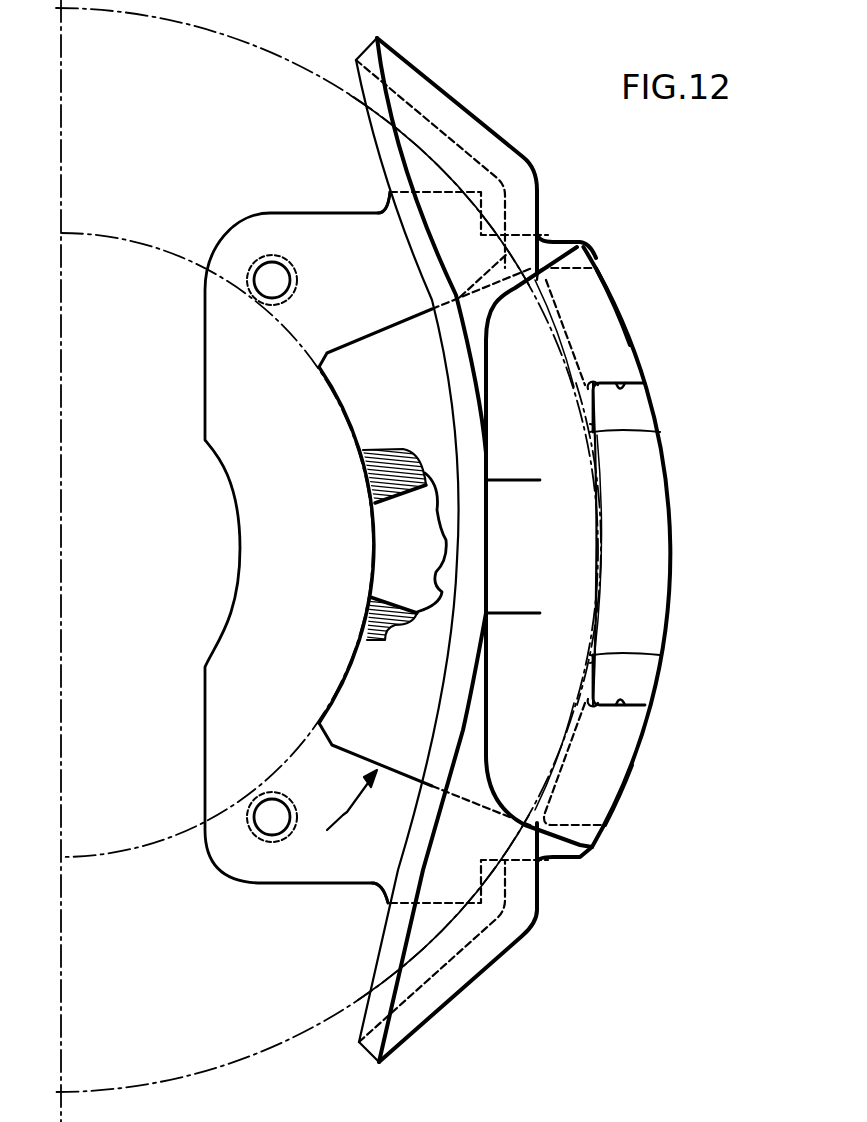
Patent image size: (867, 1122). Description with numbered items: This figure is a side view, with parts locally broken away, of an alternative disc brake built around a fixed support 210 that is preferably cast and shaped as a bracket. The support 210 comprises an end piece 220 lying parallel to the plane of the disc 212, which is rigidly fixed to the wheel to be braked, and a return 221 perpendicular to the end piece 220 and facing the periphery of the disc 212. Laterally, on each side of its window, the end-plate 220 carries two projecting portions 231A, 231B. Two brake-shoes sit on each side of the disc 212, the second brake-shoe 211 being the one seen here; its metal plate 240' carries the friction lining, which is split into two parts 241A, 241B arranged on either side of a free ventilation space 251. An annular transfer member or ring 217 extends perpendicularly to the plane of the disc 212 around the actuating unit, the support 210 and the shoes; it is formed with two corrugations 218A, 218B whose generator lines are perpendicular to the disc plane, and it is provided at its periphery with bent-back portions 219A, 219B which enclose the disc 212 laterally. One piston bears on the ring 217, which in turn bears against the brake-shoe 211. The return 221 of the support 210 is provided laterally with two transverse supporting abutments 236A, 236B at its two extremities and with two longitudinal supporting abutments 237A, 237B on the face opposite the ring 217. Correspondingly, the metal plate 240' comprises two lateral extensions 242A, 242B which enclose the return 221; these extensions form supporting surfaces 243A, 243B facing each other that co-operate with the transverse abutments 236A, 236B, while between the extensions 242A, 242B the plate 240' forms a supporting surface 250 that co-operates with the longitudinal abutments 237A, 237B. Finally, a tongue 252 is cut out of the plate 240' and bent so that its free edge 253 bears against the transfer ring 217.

The fixed support 210 is at (671, 521).
The brake-shoe 211 is at (334, 813).
The disc 212 is at (288, 75).
The annular transfer member or ring 217 is at (484, 113).
The corrugation 218A is at (545, 193).
The corrugation 218B is at (545, 895).
The bent-back portion 219A is at (417, 123).
The bent-back portion 219B is at (463, 968).
The end piece 220 is at (207, 366).
The return 221 is at (640, 572).
The projecting portion 231A is at (375, 205).
The projecting portion 231B is at (380, 893).
The transverse supporting abutment 236A is at (630, 385).
The transverse supporting abutment 236B is at (640, 700).
The longitudinal supporting abutment 237A is at (612, 432).
The longitudinal supporting abutment 237B is at (600, 637).
The metal plate 240' is at (425, 539).
The friction lining part 241A is at (385, 488).
The friction lining part 241B is at (375, 615).
The extension 242A is at (610, 307).
The extension 242B is at (612, 772).
The supporting surface 243A is at (617, 385).
The supporting surface 243B is at (630, 712).
The supporting surface 250 is at (602, 527).
The free ventilation space 251 is at (392, 543).
The tongue 252 is at (560, 583).
The free edge 253 is at (478, 540).